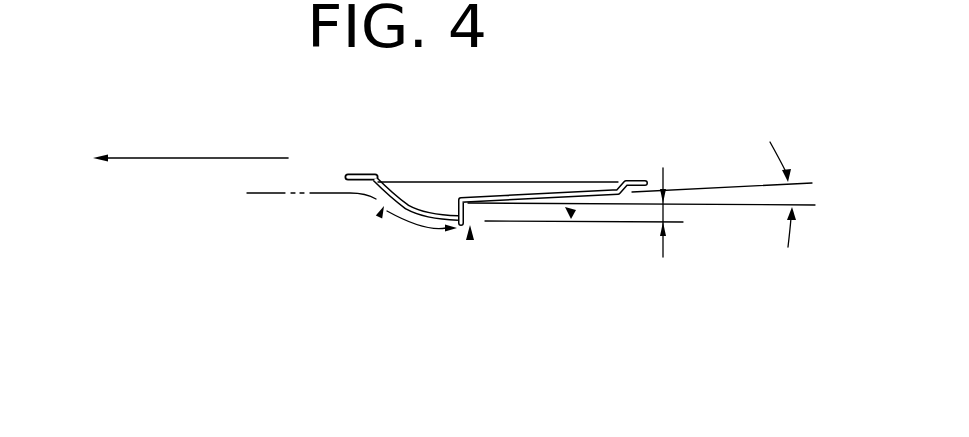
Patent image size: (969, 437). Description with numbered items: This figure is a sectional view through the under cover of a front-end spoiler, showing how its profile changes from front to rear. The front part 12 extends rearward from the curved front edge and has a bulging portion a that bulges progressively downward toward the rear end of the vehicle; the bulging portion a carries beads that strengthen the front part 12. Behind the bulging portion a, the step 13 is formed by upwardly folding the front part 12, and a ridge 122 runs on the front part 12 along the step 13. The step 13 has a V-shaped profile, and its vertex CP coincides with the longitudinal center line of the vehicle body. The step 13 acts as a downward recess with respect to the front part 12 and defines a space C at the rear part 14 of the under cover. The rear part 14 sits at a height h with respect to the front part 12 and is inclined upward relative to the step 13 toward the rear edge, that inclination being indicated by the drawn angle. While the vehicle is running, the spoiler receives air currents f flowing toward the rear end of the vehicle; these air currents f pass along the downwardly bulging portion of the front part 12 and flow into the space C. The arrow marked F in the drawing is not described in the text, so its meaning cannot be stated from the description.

The front part 12 is at (408, 200).
The step 13 is at (458, 208).
The rear part 14 is at (551, 204).
The ridge 122 is at (460, 232).
The applied force F is at (213, 158).
The air currents f is at (273, 194).
The bulging portion a is at (380, 214).
The space C is at (572, 214).
The vertex CP is at (470, 238).
The height h is at (683, 222).